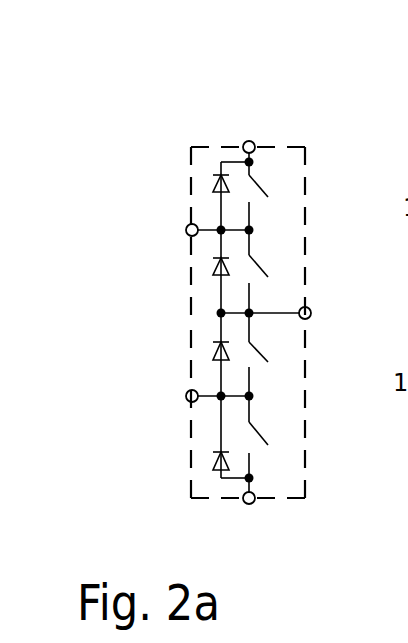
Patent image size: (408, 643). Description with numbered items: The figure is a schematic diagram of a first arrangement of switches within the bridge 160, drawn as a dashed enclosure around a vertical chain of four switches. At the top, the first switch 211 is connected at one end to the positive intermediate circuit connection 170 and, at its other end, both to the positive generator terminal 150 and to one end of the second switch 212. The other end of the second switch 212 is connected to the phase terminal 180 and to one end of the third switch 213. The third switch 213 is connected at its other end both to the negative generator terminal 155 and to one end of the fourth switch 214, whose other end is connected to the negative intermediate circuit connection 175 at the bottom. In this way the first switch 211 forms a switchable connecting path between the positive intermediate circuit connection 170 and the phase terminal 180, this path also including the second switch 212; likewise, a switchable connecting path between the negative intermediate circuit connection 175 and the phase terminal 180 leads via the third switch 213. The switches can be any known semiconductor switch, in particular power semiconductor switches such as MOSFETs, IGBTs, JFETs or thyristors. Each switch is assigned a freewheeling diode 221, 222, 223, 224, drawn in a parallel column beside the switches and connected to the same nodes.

The positive generator terminal 150 is at (187, 228).
The negative generator terminal 155 is at (187, 393).
The bridge 160 is at (307, 455).
The positive intermediate circuit connection 170 is at (253, 142).
The negative intermediate circuit connection 175 is at (253, 503).
The phase terminal 180 is at (309, 309).
The first switch 211 is at (262, 190).
The second switch 212 is at (262, 270).
The third switch 213 is at (262, 357).
The fourth switch 214 is at (262, 436).
The freewheeling diode 221 is at (214, 185).
The freewheeling diode 222 is at (213, 275).
The freewheeling diode 223 is at (214, 352).
The freewheeling diode 224 is at (213, 462).